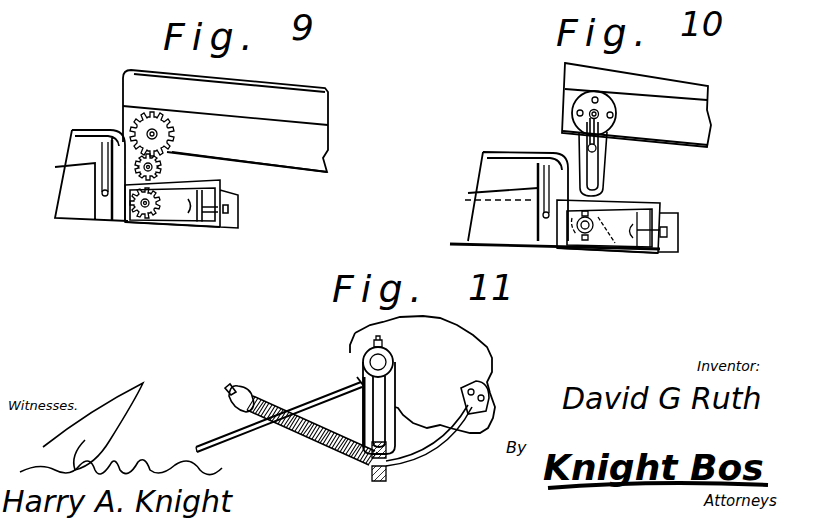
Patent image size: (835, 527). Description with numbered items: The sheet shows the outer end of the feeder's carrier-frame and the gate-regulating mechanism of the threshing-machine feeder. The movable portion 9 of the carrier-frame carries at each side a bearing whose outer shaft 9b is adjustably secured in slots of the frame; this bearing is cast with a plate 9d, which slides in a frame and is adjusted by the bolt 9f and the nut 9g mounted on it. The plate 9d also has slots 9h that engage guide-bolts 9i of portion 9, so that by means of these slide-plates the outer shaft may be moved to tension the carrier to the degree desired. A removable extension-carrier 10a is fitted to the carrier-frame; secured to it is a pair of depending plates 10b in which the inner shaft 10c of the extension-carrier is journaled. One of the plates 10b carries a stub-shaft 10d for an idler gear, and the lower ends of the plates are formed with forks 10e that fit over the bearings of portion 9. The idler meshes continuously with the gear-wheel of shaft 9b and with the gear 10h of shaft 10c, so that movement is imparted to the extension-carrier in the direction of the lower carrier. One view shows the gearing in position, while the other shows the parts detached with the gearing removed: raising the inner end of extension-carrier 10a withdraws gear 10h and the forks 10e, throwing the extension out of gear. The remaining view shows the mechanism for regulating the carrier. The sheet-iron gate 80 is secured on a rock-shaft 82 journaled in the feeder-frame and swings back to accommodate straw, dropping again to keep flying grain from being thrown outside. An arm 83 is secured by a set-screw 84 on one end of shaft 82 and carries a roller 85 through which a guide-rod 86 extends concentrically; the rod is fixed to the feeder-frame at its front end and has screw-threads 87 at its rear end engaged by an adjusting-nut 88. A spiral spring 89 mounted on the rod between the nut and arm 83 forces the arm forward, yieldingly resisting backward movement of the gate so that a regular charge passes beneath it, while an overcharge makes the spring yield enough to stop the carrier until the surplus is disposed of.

In FIG. 10, the movable portion of carrier-frame 9 is at (575, 222).
In FIG. 9, the outer shaft 9b is at (131, 222).
In FIG. 10, the outer shaft 9b is at (583, 231).
In FIG. 10, the plate 9d is at (678, 252).
In FIG. 10, the bolt 9f is at (652, 230).
In FIG. 10, the nut 9g is at (668, 230).
In FIG. 10, the slots 9h is at (640, 256).
In FIG. 10, the guide-bolts 9i is at (583, 247).
In FIG. 9, the extension-carrier 10a is at (225, 121).
In FIG. 10, the extension-carrier 10a is at (636, 105).
In FIG. 9, the depending plates 10b is at (132, 126).
In FIG. 10, the depending plates 10b is at (574, 108).
In FIG. 9, the inner shaft 10c is at (112, 129).
In FIG. 10, the inner shaft 10c is at (597, 113).
In FIG. 9, the stub-shaft 10d is at (140, 170).
In FIG. 10, the stub-shaft 10d is at (599, 150).
In FIG. 9, the forks 10e is at (147, 226).
In FIG. 10, the forks 10e is at (606, 187).
In FIG. 9, the gear 10h is at (165, 130).
In FIG. 11, the gate 80 is at (318, 392).
In FIG. 11, the rock-shaft 82 is at (365, 360).
In FIG. 11, the arm 83 is at (362, 413).
In FIG. 11, the set-screw 84 is at (385, 342).
In FIG. 11, the roller 85 is at (387, 471).
In FIG. 11, the guide-rod 86 is at (440, 450).
In FIG. 11, the screw-threads 87 is at (232, 393).
In FIG. 11, the adjusting-nut 88 is at (227, 405).
In FIG. 11, the spiral spring 89 is at (320, 446).